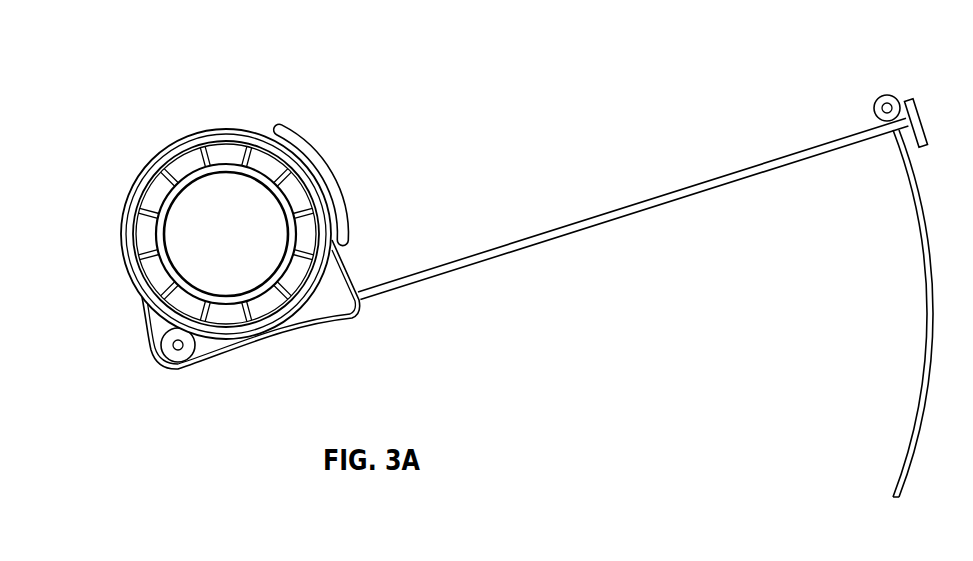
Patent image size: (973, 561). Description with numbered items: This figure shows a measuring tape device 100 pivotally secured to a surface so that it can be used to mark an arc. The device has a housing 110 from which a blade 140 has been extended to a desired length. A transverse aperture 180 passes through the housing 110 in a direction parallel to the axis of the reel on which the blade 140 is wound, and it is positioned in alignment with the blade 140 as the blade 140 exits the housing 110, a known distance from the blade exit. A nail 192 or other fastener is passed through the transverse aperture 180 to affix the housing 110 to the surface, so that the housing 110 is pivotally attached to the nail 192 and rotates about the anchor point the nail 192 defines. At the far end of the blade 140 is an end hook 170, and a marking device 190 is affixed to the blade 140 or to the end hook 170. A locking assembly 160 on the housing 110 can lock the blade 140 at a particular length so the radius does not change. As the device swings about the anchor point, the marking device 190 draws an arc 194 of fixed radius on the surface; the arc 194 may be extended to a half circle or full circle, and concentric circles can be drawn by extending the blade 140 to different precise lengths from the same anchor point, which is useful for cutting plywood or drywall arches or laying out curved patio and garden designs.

The measuring tape device 100 is at (176, 108).
The housing 110 is at (229, 156).
The blade 140 is at (596, 223).
The locking assembly 160 is at (323, 158).
The end hook 170 is at (921, 106).
The transverse aperture 180 is at (167, 359).
The marking device 190 is at (880, 99).
The nail 192 is at (178, 350).
The arc 194 is at (920, 243).